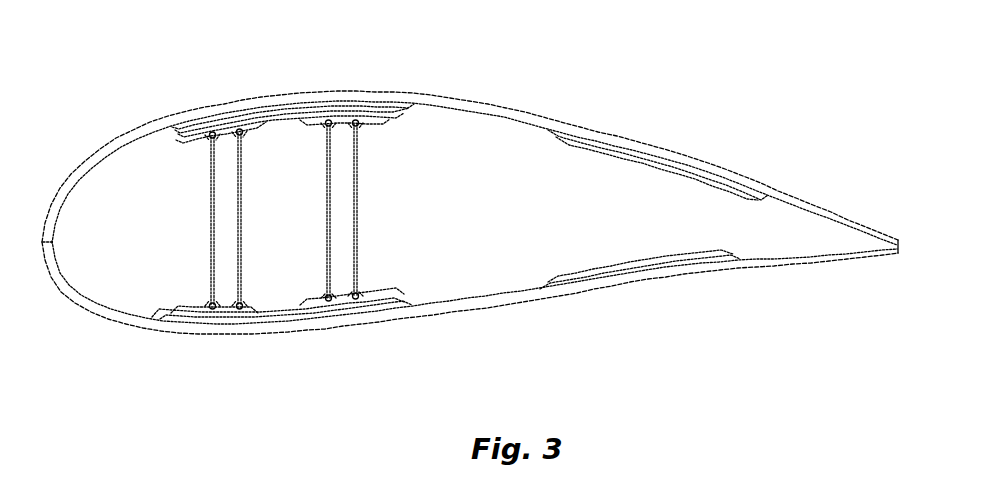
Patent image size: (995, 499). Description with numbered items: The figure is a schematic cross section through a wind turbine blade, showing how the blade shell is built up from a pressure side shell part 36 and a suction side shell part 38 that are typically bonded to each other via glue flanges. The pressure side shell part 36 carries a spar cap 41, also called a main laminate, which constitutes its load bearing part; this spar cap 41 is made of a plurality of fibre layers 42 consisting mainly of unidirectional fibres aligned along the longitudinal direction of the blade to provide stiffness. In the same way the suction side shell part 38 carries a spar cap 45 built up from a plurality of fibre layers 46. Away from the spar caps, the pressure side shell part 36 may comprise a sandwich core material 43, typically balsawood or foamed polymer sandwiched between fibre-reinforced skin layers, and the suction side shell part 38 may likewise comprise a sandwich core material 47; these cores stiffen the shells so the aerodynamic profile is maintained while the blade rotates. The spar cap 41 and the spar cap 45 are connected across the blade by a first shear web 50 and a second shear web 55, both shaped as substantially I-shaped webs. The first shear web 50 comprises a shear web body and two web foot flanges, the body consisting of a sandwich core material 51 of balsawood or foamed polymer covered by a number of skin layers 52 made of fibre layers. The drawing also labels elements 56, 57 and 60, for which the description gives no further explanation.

The pressure side shell part 36 is at (518, 302).
The suction side shell part 38 is at (505, 106).
The spar cap 41 is at (365, 324).
The fibre layers 42 is at (305, 333).
The sandwich core material 43 is at (654, 273).
The spar cap 45 is at (252, 92).
The fibre layers 46 is at (357, 108).
The sandwich core material 47 is at (658, 140).
The first shear web 50 is at (230, 217).
The sandwich core material 51 is at (242, 236).
The skin layers 52 is at (242, 168).
The second shear web 55 is at (363, 212).
The second spar web 56 is at (350, 233).
The second spar web 57 is at (357, 203).
The spar flange 60 is at (218, 300).